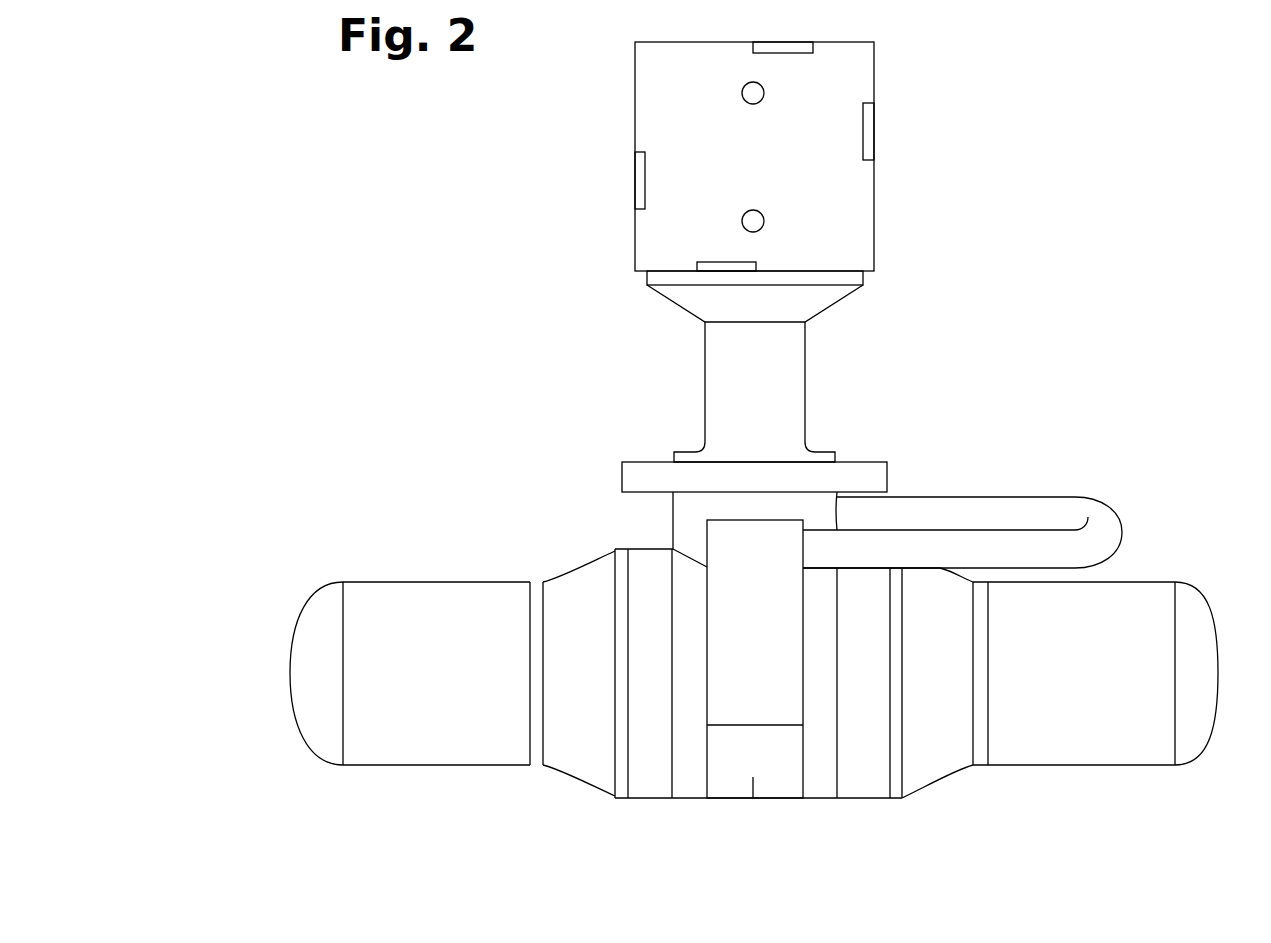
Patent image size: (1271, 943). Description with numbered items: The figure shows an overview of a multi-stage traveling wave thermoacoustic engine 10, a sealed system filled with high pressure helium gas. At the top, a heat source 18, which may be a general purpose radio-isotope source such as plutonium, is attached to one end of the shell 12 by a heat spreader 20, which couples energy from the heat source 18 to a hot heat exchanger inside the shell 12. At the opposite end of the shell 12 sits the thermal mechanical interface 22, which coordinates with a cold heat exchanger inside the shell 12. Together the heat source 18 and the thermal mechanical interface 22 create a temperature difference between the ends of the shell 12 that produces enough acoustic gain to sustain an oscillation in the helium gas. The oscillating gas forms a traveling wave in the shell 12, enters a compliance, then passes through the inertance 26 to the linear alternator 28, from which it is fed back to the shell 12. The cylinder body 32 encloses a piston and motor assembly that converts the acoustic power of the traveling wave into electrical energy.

The thermoacoustic engine 10 is at (345, 210).
The shell 12 is at (705, 357).
The heat source 18 is at (650, 117).
The heat spreader 20 is at (648, 283).
The thermal mechanical interface 22 is at (622, 482).
The inertance 26 is at (955, 497).
The linear alternator 28 is at (721, 676).
The cylinder body 32 is at (418, 755).